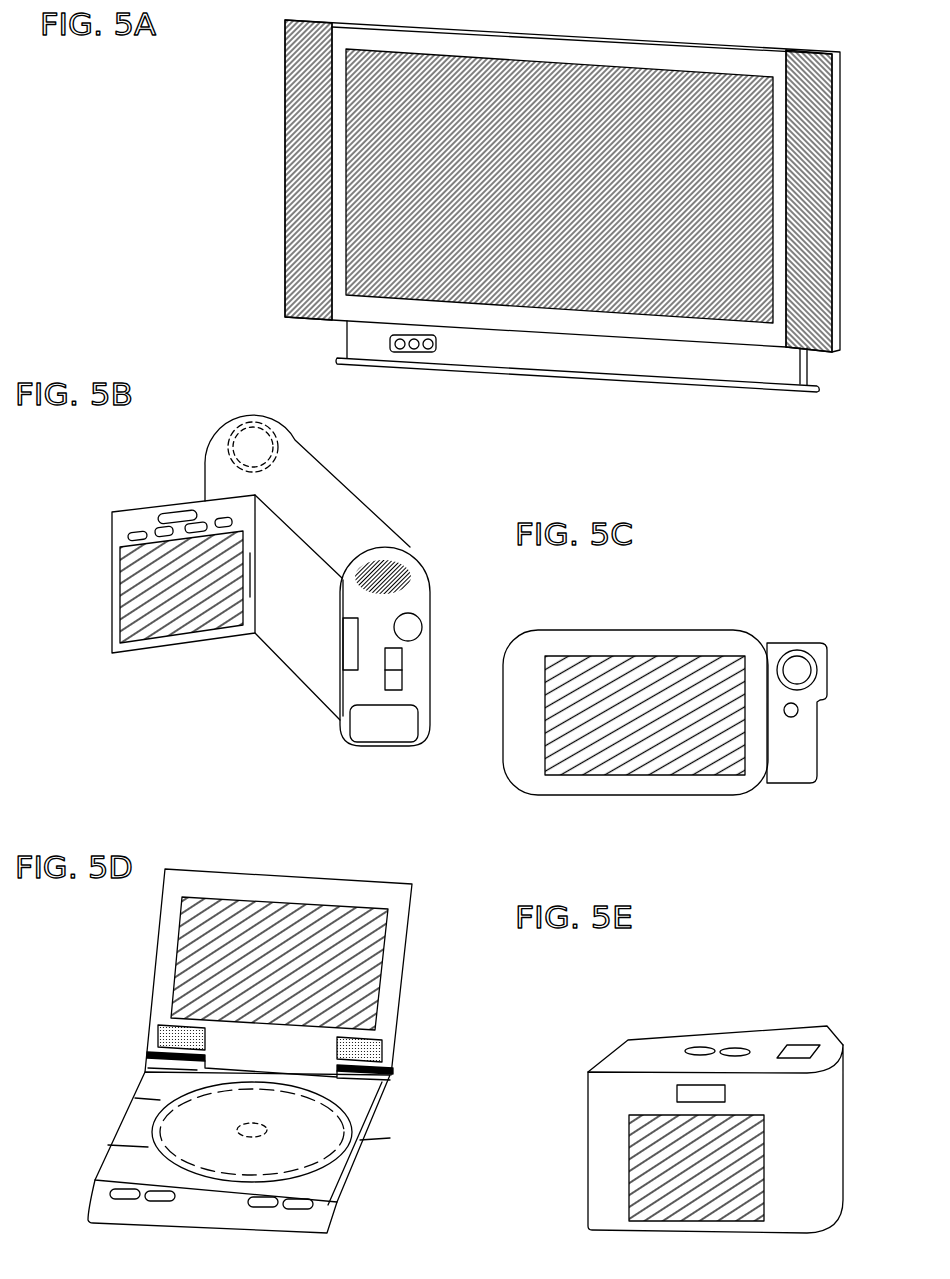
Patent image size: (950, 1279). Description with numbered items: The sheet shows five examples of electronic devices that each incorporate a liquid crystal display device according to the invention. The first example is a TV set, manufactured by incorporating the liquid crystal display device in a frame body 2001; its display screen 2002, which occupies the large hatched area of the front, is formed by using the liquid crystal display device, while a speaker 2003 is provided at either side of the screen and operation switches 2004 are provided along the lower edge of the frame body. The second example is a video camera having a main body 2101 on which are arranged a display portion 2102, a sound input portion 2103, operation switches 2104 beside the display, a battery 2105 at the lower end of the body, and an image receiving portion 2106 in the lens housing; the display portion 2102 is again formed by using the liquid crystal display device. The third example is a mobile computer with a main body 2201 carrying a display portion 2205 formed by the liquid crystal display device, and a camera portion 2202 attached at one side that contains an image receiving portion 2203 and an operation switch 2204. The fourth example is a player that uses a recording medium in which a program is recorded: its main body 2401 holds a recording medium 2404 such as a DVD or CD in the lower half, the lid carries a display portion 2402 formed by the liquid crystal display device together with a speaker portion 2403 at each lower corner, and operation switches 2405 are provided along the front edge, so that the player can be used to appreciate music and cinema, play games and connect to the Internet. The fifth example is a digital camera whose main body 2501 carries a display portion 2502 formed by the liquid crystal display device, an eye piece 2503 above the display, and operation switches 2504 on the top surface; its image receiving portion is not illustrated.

In FIG. 5A, the frame body 2001 is at (725, 328).
In FIG. 5A, the display screen 2002 is at (362, 155).
In FIG. 5A, the speaker 2003 is at (292, 157).
In FIG. 5A, the operation switches 2004 is at (418, 353).
In FIG. 5B, the main body 2101 is at (312, 488).
In FIG. 5B, the display portion 2102 is at (175, 615).
In FIG. 5B, the sound input portion 2103 is at (395, 577).
In FIG. 5B, the operation switches 2104 is at (175, 520).
In FIG. 5B, the battery 2105 is at (370, 722).
In FIG. 5B, the image receiving portion 2106 is at (253, 425).
In FIG. 5C, the main body 2201 is at (552, 642).
In FIG. 5C, the camera portion 2202 is at (855, 622).
In FIG. 5C, the image receiving portion 2203 is at (800, 670).
In FIG. 5C, the operation switch 2204 is at (792, 717).
In FIG. 5C, the display portion 2205 is at (632, 677).
In FIG. 5D, the main body 2401 is at (310, 892).
In FIG. 5D, the display portion 2402 is at (263, 942).
In FIG. 5D, the speaker portion 2403 is at (367, 1052).
In FIG. 5D, the recording medium 2404 is at (307, 1152).
In FIG. 5D, the operation switches 2405 is at (302, 1203).
In FIG. 5E, the main body 2501 is at (620, 1060).
In FIG. 5E, the display portion 2502 is at (658, 1160).
In FIG. 5E, the eye piece 2503 is at (688, 1097).
In FIG. 5E, the operation switches 2504 is at (800, 1045).